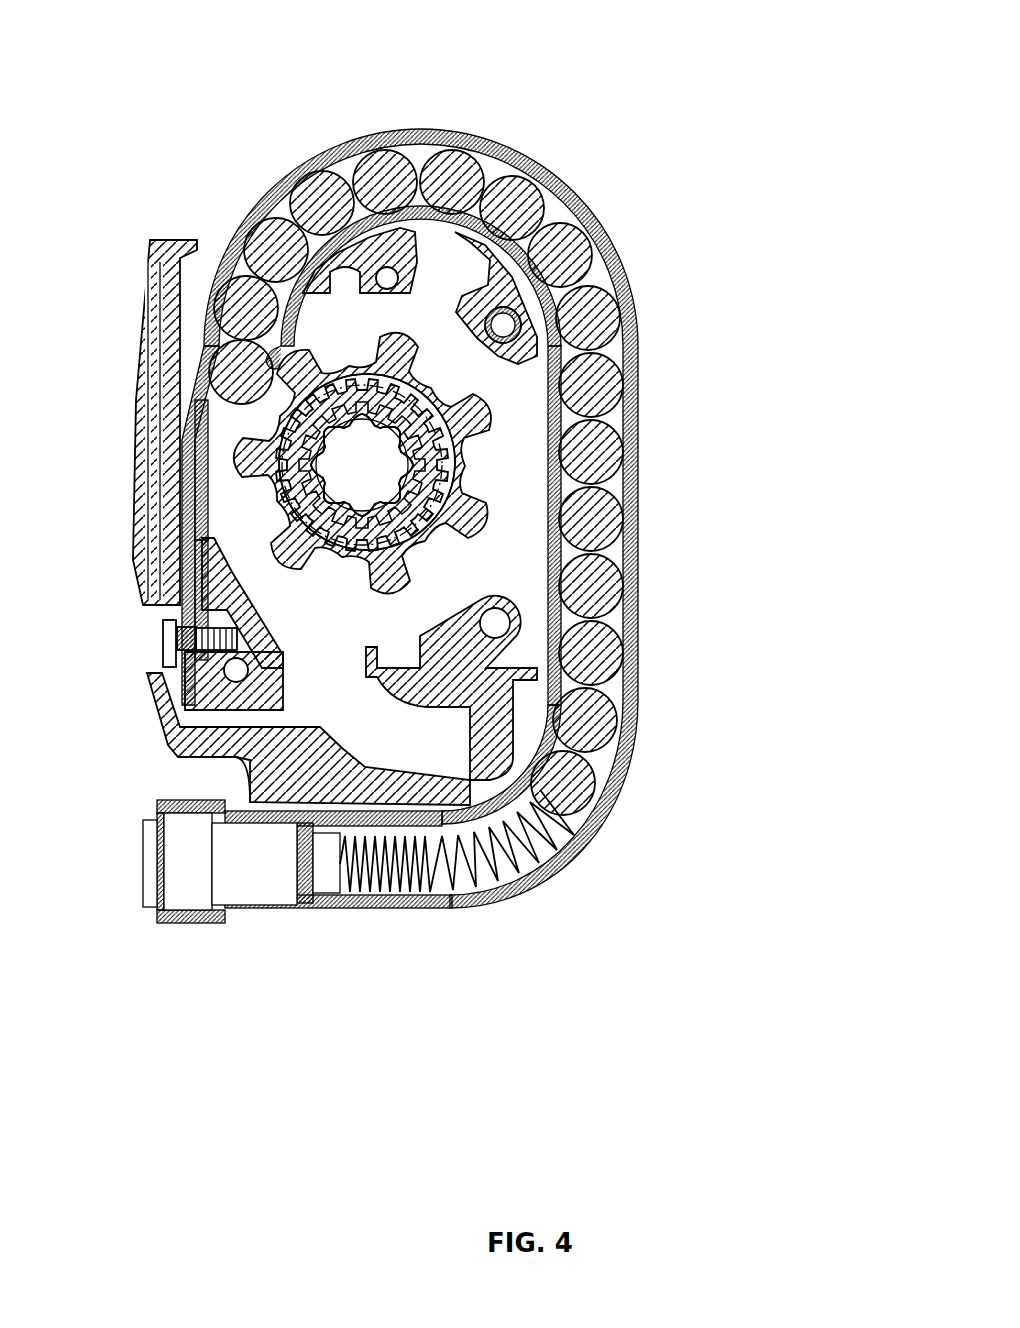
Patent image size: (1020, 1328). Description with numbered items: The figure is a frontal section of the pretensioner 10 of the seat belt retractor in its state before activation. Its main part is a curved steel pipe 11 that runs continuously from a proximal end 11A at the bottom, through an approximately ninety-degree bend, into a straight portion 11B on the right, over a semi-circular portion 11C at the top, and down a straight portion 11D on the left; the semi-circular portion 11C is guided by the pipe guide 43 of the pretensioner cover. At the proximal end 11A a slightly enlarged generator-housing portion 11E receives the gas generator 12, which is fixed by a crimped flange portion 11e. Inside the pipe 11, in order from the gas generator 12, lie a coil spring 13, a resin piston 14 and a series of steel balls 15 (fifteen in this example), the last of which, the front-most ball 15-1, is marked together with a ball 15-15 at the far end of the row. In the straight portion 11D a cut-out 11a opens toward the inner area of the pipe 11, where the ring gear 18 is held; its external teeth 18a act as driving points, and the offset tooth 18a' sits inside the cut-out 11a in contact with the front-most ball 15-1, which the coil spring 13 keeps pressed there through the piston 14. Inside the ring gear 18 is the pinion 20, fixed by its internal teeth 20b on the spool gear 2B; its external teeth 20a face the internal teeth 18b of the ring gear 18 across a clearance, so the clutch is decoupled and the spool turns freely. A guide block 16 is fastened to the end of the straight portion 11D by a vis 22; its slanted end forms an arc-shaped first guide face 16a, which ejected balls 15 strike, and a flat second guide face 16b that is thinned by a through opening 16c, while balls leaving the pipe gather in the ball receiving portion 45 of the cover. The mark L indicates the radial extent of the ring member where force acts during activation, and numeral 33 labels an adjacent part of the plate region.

The pretensioner 10 is at (598, 128).
The pipe 11 is at (645, 432).
The cut-out 11a is at (235, 235).
The proximal end 11A is at (380, 910).
The straight portion 11B is at (643, 587).
The semi-circular portion 11C is at (588, 217).
The straight portion 11D is at (198, 497).
The generator-housing portion 11E is at (290, 913).
The crimped flange portion 11e is at (180, 927).
The gas generator 12 is at (245, 882).
The coil spring 13 is at (433, 887).
The piston 14 is at (593, 803).
The balls 15 is at (615, 523).
The front-most ball 15-1 is at (188, 382).
The ball row 15-15 is at (623, 737).
The guide block 16 is at (173, 748).
The first guide face 16a is at (190, 640).
The second guide face 16b is at (232, 618).
The through opening 16c is at (270, 653).
The ring gear 18 is at (420, 577).
The external teeth 18a is at (131, 600).
The offset tooth 18a' is at (170, 399).
The internal teeth 18b is at (452, 450).
The pinion 20 is at (447, 385).
The external teeth 20a is at (450, 487).
The internal teeth 20b is at (390, 442).
The vis 22 is at (160, 650).
The spool gear 2B is at (342, 507).
The guide channel 33 is at (165, 535).
The pipe guide 43 is at (620, 282).
The ball receiving portion 45 is at (250, 783).
The mark L is at (360, 372).